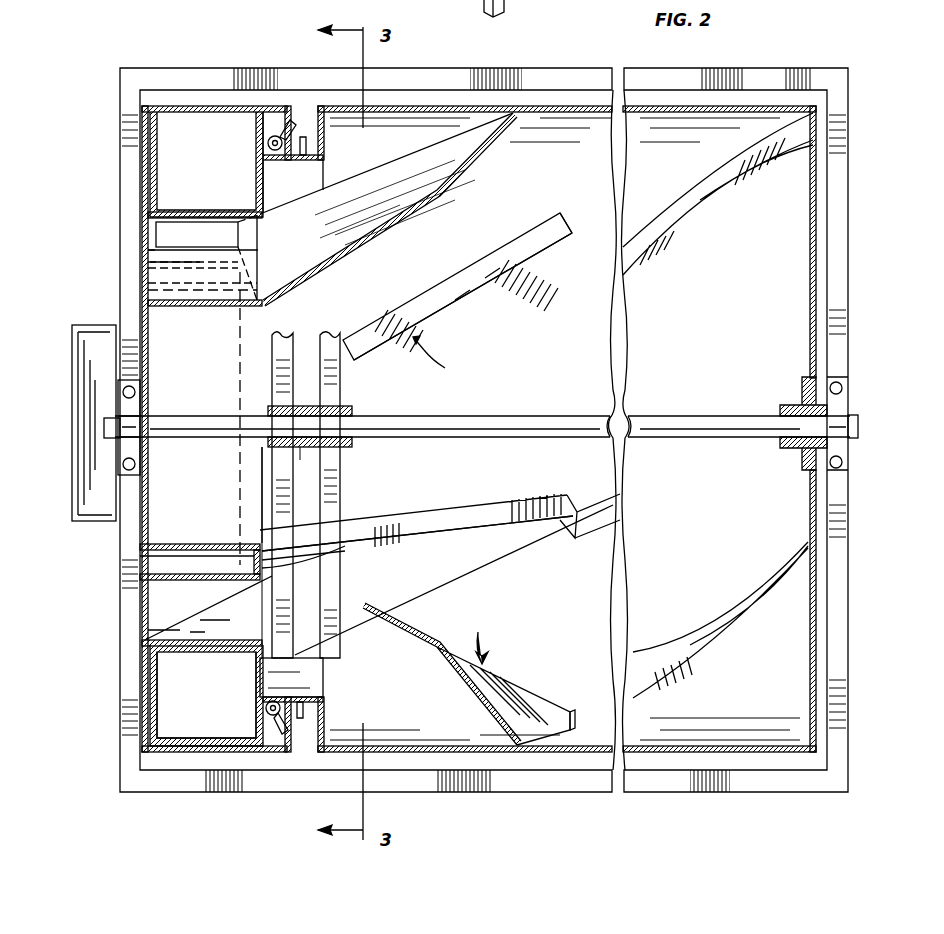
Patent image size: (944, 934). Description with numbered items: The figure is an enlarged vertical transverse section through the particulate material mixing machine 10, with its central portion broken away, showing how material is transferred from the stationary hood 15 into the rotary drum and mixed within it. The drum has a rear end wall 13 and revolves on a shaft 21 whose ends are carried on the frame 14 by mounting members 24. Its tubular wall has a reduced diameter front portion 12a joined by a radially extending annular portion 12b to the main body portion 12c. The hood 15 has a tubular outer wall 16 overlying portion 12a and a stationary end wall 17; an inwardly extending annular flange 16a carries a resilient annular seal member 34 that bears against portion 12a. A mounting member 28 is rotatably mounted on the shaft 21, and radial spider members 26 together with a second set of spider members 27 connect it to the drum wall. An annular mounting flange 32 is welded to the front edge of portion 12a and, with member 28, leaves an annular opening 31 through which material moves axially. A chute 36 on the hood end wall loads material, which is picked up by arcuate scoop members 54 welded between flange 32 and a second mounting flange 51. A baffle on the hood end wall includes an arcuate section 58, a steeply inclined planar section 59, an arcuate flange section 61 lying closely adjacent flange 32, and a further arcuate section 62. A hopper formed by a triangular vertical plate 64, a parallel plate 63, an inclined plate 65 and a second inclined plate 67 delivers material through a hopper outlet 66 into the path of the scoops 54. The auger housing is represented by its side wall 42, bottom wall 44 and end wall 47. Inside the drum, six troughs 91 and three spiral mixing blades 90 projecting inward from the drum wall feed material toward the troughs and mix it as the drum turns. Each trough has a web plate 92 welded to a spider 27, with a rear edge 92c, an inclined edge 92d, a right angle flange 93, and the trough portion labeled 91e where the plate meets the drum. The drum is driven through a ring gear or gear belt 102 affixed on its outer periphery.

The particulate material mixing machine 10 is at (725, 108).
The rear end wall 13 is at (818, 208).
The frame 14 is at (700, 800).
The stationary hood 15 is at (162, 105).
The tubular outer wall 16 is at (208, 108).
The inwardly extending annular flange 16a is at (292, 120).
The stationary end wall 17 is at (140, 147).
The reduced diameter portion 12a is at (296, 162).
The radially extending annular portion 12b is at (368, 132).
The main body portion 12c is at (428, 748).
The resilient annular seal member 34 is at (266, 142).
The scoop members 54 is at (222, 186).
The second annular mounting flange 51 is at (152, 680).
The arcuate baffle section 62 is at (165, 228).
The second hopper plate 63 is at (262, 265).
The second plate 67 is at (265, 222).
The hopper outlet 66 is at (160, 275).
The plate 65 is at (170, 292).
The vertical axially extending plate 64 is at (212, 290).
The arcuate flange section 61 is at (240, 356).
The mounting member 28 is at (352, 408).
The shaft 21 is at (700, 432).
The mounting members 24 is at (120, 452).
The chute 36 is at (78, 522).
The second plurality of radially extending spider members 27 is at (285, 487).
The radial spider members 26 is at (340, 595).
The annular mounting flange 32 is at (258, 690).
The ring gear or gear belt 102 is at (300, 720).
The planar baffle section 59 is at (190, 474).
The bottom wall 44 is at (215, 545).
The end wall 47 is at (138, 577).
The arcuate baffle section 58 is at (150, 638).
The annular opening 31 is at (248, 635).
The side wall 42 is at (262, 565).
The web plate 92 is at (518, 262).
The right angle flange 93 is at (484, 278).
The edge 92d is at (470, 318).
The rear edge 92c is at (566, 222).
The troughs 91 is at (457, 500).
The arm end 91e is at (415, 600).
The spiral mixing blades 90 is at (600, 517).